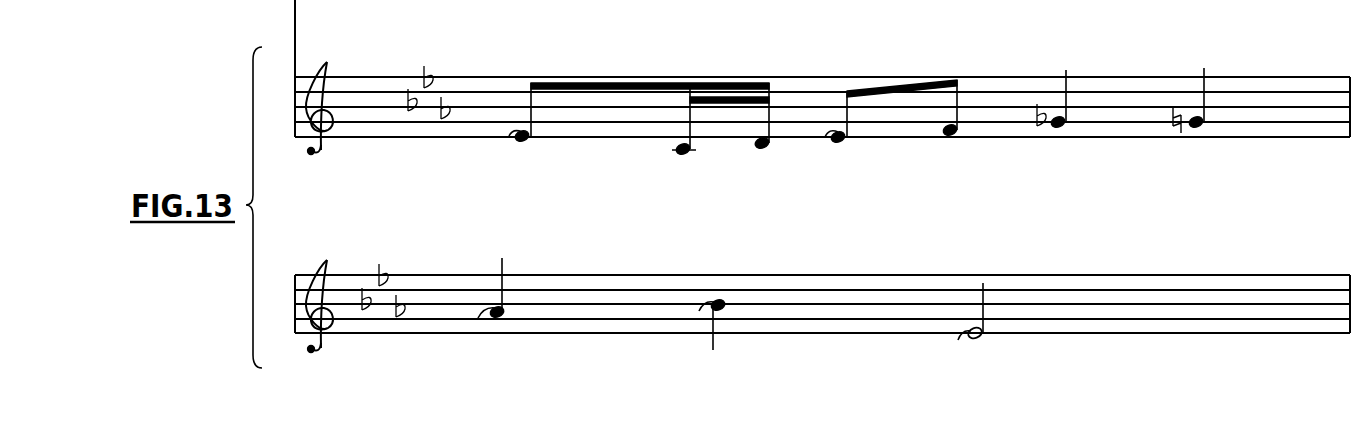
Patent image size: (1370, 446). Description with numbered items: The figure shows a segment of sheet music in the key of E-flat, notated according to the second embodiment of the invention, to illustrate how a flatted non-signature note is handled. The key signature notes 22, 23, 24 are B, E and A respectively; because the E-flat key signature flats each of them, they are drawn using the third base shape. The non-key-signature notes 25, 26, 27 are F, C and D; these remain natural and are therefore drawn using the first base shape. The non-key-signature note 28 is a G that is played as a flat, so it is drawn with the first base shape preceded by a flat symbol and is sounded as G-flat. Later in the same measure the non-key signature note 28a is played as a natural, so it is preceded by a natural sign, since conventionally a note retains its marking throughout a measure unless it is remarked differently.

The key signature note 22 is at (723, 300).
The key signature note 23 is at (528, 142).
The key signature note 24 is at (500, 320).
The non-key-signature note 25 is at (950, 137).
The non-key-signature note 26 is at (683, 156).
The non-key-signature note 27 is at (762, 150).
The non-key-signature note 28 is at (1058, 129).
The non-key signature note 28a is at (1196, 130).